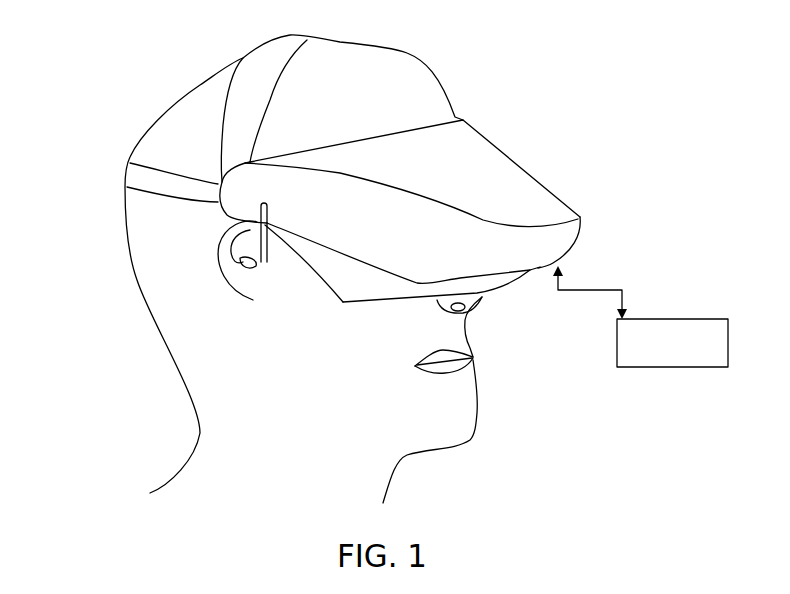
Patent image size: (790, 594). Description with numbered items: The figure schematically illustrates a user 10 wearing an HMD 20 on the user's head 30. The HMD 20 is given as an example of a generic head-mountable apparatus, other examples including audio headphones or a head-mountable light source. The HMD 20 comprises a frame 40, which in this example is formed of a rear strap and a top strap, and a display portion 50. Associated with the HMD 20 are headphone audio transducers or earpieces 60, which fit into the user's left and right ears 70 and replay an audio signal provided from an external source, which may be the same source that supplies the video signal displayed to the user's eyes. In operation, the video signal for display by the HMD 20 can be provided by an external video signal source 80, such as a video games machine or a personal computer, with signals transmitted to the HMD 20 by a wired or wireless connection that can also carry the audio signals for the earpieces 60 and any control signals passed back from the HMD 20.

The user 10 is at (100, 350).
The HMD 20 is at (538, 153).
The user's head 30 is at (133, 246).
The frame 40 is at (128, 173).
The display portion 50 is at (565, 200).
The earpieces 60 is at (267, 265).
The ears 70 is at (217, 245).
The external video signal source 80 is at (705, 317).